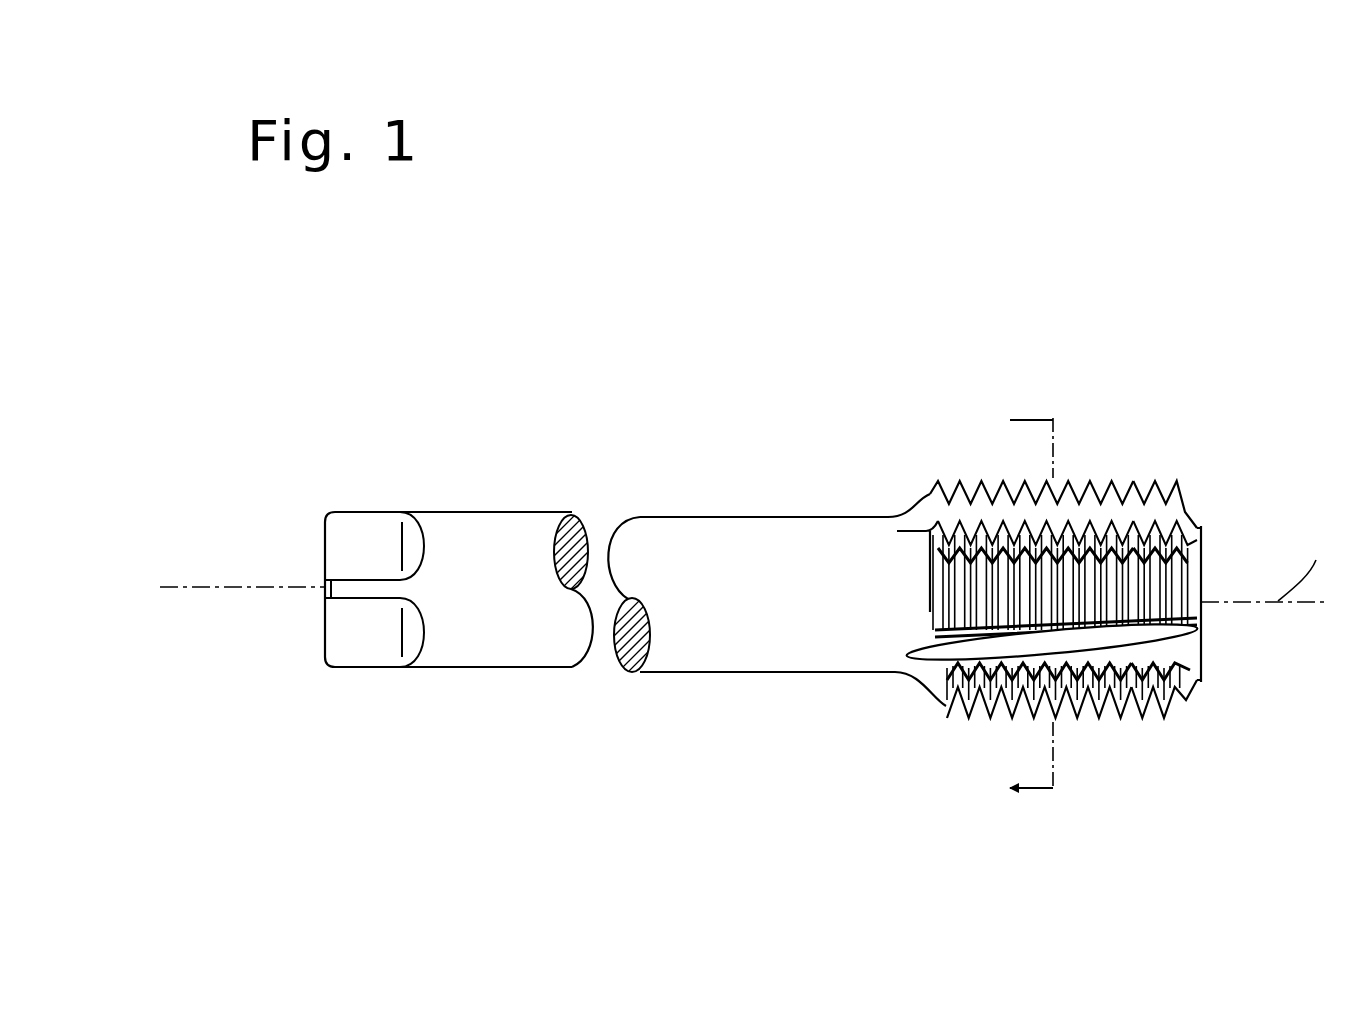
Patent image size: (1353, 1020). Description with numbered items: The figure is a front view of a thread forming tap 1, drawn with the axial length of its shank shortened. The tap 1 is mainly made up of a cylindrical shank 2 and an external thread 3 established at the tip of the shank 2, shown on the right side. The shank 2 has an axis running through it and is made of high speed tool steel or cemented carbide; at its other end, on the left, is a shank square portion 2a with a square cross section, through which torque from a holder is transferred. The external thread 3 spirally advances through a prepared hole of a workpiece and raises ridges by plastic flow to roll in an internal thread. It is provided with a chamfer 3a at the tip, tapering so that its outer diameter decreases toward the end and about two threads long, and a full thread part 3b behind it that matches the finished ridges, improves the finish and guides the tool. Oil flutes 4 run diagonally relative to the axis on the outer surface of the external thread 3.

The thread forming tap 1 is at (602, 215).
The shank 2 is at (727, 480).
The shank square portion 2a is at (358, 535).
The external thread 3 is at (948, 329).
The chamfer 3a is at (1188, 385).
The full thread part 3b is at (948, 385).
The oil flutes 4 is at (926, 498).